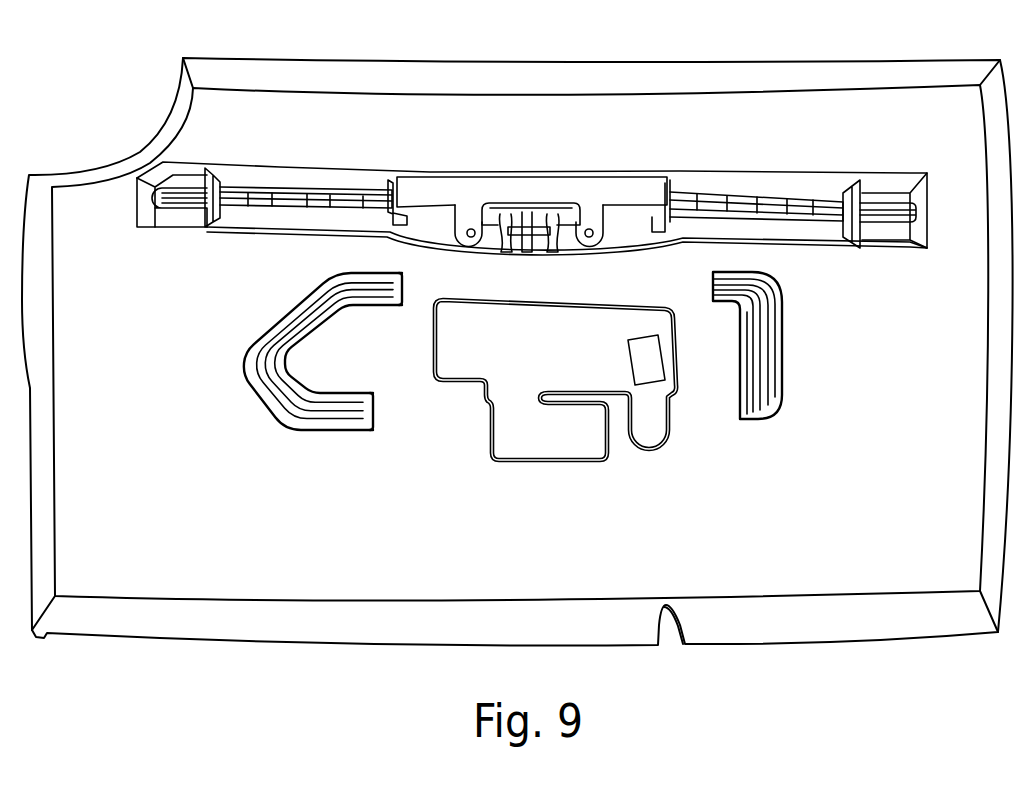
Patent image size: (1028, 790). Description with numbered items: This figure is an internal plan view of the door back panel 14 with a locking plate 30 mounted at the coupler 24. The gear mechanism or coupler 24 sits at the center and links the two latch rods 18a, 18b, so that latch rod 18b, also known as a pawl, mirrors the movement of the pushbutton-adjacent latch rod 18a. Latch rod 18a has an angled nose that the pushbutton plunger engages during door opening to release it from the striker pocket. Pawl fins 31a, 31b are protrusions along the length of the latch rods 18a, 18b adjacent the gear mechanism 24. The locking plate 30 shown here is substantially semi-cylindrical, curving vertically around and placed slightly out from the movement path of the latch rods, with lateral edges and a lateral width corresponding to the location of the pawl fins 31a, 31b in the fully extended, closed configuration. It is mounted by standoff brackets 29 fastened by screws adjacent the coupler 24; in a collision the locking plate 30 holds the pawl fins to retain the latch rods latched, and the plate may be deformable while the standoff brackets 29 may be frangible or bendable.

The back panel 14 is at (230, 642).
The latch rod 18a is at (291, 190).
The latch rod 18b is at (773, 200).
The gear mechanism or coupler 24 is at (528, 225).
The standoff brackets 29 is at (472, 216).
The locking plate 30 is at (567, 190).
The pawl fin 31a is at (390, 183).
The pawl fin 31b is at (683, 192).